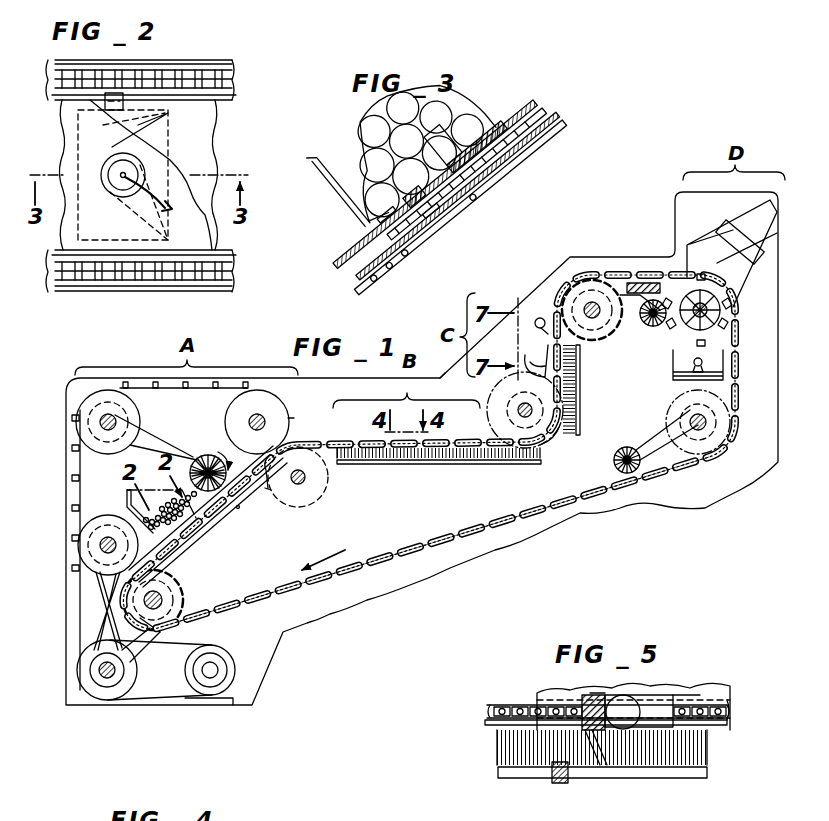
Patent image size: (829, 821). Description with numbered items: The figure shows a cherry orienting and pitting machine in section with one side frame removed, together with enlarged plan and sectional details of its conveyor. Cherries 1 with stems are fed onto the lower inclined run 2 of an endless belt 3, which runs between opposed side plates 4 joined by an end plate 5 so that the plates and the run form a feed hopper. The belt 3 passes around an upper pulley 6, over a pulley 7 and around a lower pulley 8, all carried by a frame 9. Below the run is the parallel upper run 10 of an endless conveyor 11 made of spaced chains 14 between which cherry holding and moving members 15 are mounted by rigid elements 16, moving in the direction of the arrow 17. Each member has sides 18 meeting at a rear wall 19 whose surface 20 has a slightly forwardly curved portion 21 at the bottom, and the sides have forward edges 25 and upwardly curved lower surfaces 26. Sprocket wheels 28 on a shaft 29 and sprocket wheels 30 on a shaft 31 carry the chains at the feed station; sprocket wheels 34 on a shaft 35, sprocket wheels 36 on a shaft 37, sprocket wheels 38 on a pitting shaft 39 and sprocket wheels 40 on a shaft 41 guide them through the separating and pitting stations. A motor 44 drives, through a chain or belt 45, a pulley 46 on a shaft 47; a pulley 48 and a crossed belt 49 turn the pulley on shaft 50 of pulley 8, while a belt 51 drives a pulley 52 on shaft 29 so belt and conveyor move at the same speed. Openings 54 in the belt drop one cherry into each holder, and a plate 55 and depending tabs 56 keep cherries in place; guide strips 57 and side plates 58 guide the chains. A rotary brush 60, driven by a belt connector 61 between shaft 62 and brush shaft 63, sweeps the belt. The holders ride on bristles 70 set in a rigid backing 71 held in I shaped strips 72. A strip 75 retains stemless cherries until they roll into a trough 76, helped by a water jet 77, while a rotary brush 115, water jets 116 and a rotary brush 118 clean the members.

In FIG. 3, the cherries 1 is at (386, 117).
In FIG. 1, the cherries 1 is at (184, 514).
In FIG. 2, the lower inclined run 2 is at (105, 228).
In FIG. 3, the lower inclined run 2 is at (420, 167).
In FIG. 1, the lower inclined run 2 is at (252, 510).
In FIG. 2, the endless belt 3 is at (58, 128).
In FIG. 1, the endless belt 3 is at (64, 450).
In FIG. 3, the side plates 4 is at (329, 195).
In FIG. 3, the end plate 5 is at (307, 190).
In FIG. 1, the end plate 5 is at (124, 514).
In FIG. 1, the upper pulley 6 is at (272, 408).
In FIG. 1, the pulley 7 is at (90, 406).
In FIG. 1, the lower pulley 8 is at (82, 565).
In FIG. 2, the frame 9 is at (182, 60).
In FIG. 1, the frame 9 is at (420, 518).
In FIG. 1, the upper run 10 is at (215, 511).
In FIG. 1, the endless conveyor 11 is at (553, 490).
In FIG. 2, the endless chains 14 is at (232, 76).
In FIG. 3, the endless chains 14 is at (468, 158).
In FIG. 1, the endless chains 14 is at (292, 588).
In FIG. 5, the endless chains 14 is at (490, 708).
In FIG. 2, the cherry holding and moving members 15 is at (140, 128).
In FIG. 3, the cherry holding and moving members 15 is at (408, 231).
In FIG. 2, the rigid elements 16 is at (125, 103).
In FIG. 1, the arrow 17 is at (318, 560).
In FIG. 5, the sides 18 is at (644, 705).
In FIG. 5, the rear wall 19 is at (592, 693).
In FIG. 3, the rear wall surface 20 is at (360, 215).
In FIG. 5, the rear wall surface 20 is at (604, 696).
In FIG. 3, the forwardly curved portion 21 is at (431, 210).
In FIG. 5, the forwardly curved portion 21 is at (603, 735).
In FIG. 5, the forward edges 25 is at (690, 690).
In FIG. 5, the lower surface 26 is at (727, 724).
In FIG. 1, the sprocket wheels 28 is at (170, 584).
In FIG. 1, the shaft 29 is at (166, 628).
In FIG. 1, the sprocket wheels 30 is at (318, 470).
In FIG. 1, the shaft 31 is at (298, 485).
In FIG. 1, the sprocket wheels 34 is at (530, 401).
In FIG. 1, the shaft 35 is at (510, 400).
In FIG. 1, the sprocket wheels 36 is at (600, 340).
In FIG. 1, the shaft 37 is at (592, 322).
In FIG. 1, the sprocket wheels 38 is at (722, 303).
In FIG. 1, the shaft 39 is at (712, 311).
In FIG. 1, the sprocket wheels 40 is at (720, 422).
In FIG. 1, the shaft 41 is at (705, 428).
In FIG. 1, the motor 44 is at (228, 655).
In FIG. 1, the chain or belt 45 is at (155, 700).
In FIG. 1, the pulley 46 is at (95, 700).
In FIG. 1, the shaft 47 is at (100, 675).
In FIG. 1, the pulley 48 is at (95, 668).
In FIG. 1, the crossed belt 49 is at (100, 600).
In FIG. 1, the shaft 50 is at (100, 546).
In FIG. 1, the belt 51 is at (132, 645).
In FIG. 1, the pulley 52 is at (172, 599).
In FIG. 2, the openings 54 is at (108, 165).
In FIG. 2, the plate 55 is at (208, 162).
In FIG. 3, the plate 55 is at (471, 220).
In FIG. 1, the plate 55 is at (192, 540).
In FIG. 2, the depending tab 56 is at (178, 190).
In FIG. 3, the depending tab 56 is at (477, 154).
In FIG. 2, the guide strips 57 is at (238, 88).
In FIG. 3, the guide strips 57 is at (472, 190).
In FIG. 5, the guide strips 57 is at (485, 722).
In FIG. 2, the side plates 58 is at (226, 101).
In FIG. 5, the side plates 58 is at (548, 691).
In FIG. 1, the rotary brush 60 is at (203, 458).
In FIG. 1, the belt connector 61 is at (140, 440).
In FIG. 1, the shaft 62 is at (125, 415).
In FIG. 1, the brush shaft 63 is at (214, 455).
In FIG. 1, the bristles 70 is at (432, 460).
In FIG. 5, the bristles 70 is at (497, 748).
In FIG. 1, the rigid backing 71 is at (505, 464).
In FIG. 5, the rigid backing 71 is at (510, 778).
In FIG. 5, the I shaped strips 72 is at (558, 784).
In FIG. 1, the strip 75 is at (523, 445).
In FIG. 1, the trough 76 is at (540, 358).
In FIG. 1, the water jet 77 is at (545, 316).
In FIG. 1, the rotary brush 115 is at (618, 458).
In FIG. 1, the water jets 116 is at (722, 353).
In FIG. 1, the rotary brush 118 is at (653, 328).